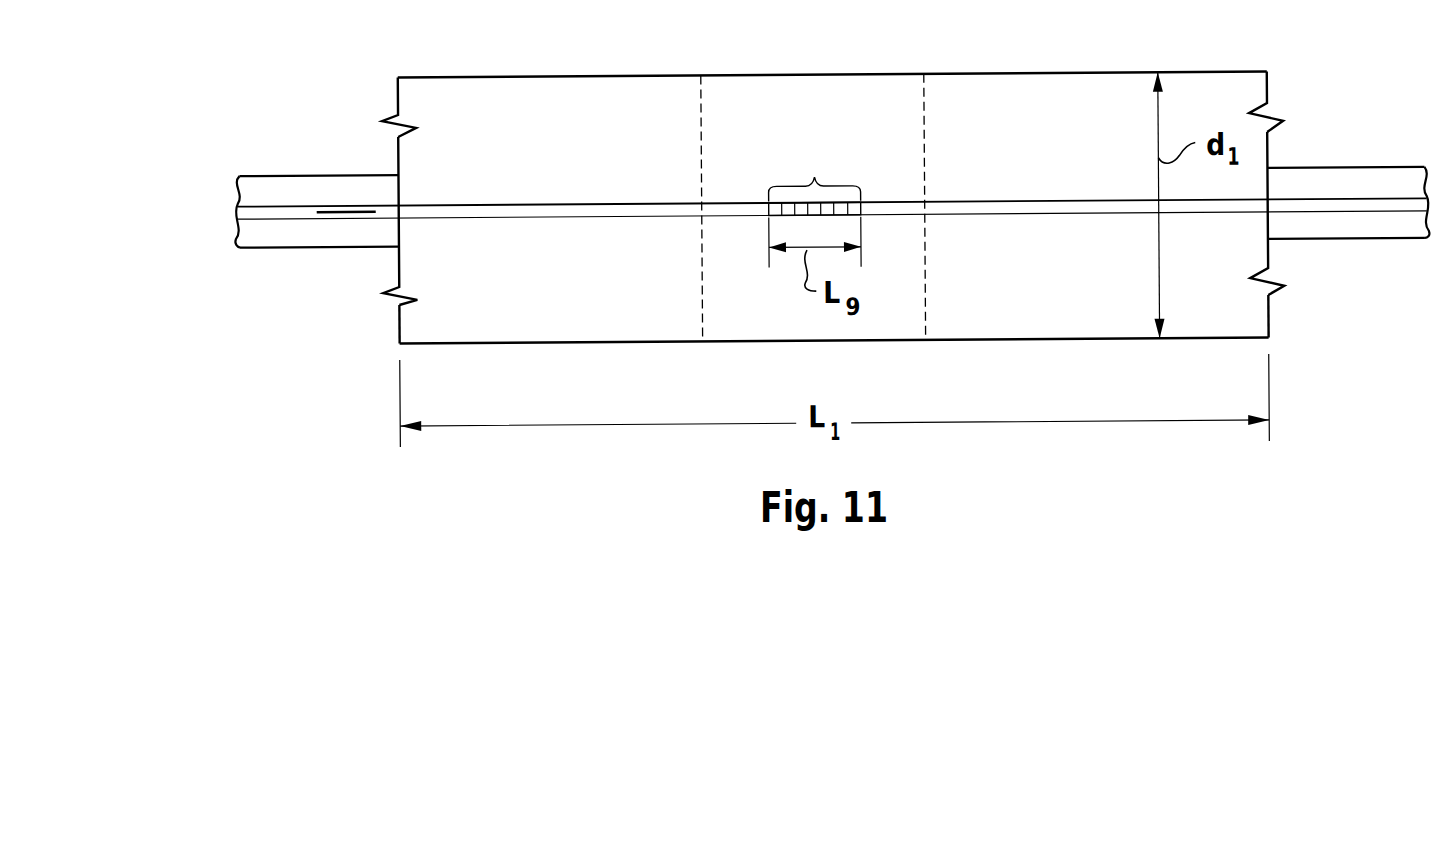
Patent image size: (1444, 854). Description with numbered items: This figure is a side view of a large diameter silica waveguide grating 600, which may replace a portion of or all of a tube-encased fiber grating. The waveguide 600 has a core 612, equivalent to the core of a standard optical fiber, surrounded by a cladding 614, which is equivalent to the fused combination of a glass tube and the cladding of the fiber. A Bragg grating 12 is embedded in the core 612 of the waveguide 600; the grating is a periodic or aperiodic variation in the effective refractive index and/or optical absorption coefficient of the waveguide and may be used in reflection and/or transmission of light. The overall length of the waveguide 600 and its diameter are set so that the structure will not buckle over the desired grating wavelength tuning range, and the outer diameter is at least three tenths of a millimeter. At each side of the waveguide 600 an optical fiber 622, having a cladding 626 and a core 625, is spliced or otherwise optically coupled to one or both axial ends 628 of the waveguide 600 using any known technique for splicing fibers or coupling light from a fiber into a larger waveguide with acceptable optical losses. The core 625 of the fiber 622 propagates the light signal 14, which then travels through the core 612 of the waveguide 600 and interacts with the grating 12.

The large diameter silica waveguide grating 600 is at (396, 72).
The cladding 626 is at (265, 172).
The optical fiber 622 is at (314, 161).
The axial end 628 is at (398, 157).
The core 625 is at (288, 209).
The light 14 is at (351, 209).
The core 612 is at (505, 202).
The Bragg grating 12 is at (815, 176).
The cladding 614 is at (1072, 160).